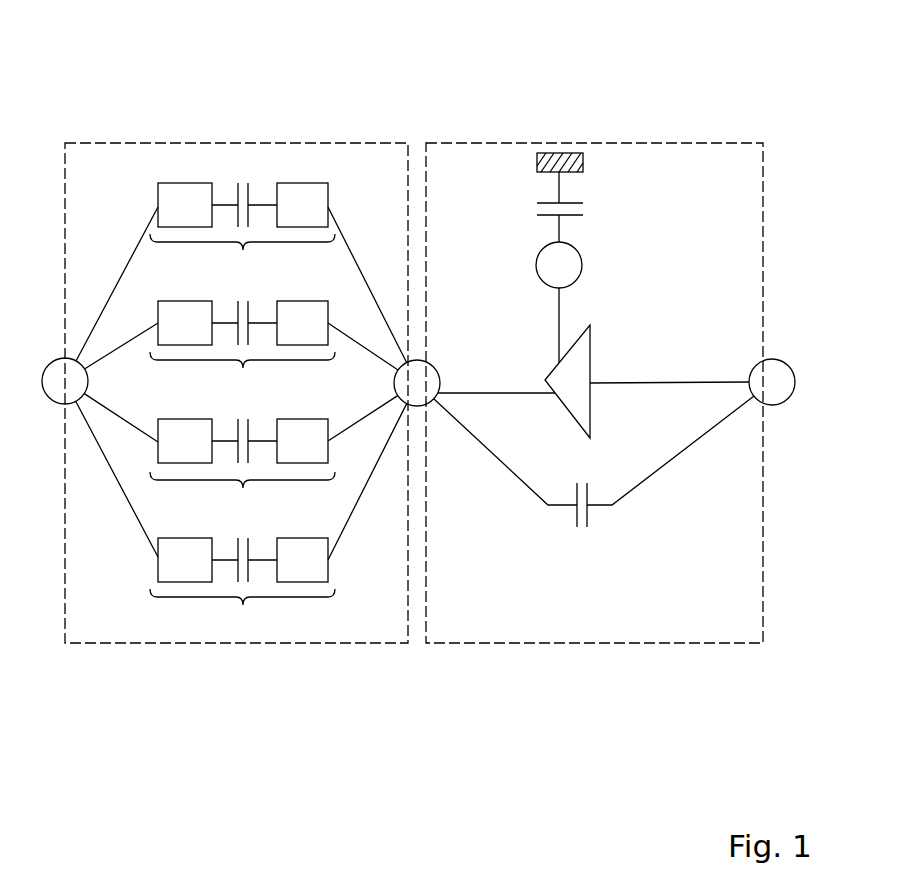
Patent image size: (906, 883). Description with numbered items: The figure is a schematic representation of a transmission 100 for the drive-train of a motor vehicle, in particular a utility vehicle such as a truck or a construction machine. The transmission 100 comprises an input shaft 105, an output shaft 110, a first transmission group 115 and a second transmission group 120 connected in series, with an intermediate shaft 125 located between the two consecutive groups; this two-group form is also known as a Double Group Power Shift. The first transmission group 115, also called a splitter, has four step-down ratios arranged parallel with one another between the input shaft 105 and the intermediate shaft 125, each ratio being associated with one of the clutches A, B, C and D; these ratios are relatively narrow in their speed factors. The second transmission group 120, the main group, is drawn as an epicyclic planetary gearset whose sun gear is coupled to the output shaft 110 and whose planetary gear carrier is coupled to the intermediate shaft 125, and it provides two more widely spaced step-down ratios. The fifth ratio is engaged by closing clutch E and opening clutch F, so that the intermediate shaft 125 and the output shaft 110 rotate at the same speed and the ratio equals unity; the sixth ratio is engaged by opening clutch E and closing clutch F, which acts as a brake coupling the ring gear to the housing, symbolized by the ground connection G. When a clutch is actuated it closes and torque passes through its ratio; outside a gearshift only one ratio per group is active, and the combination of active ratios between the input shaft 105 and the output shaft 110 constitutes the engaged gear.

The transmission 100 is at (683, 688).
The input shaft 105 is at (50, 358).
The output shaft 110 is at (782, 360).
The first transmission group 115 is at (178, 143).
The second transmission group 120 is at (662, 143).
The intermediate shaft 125 is at (437, 363).
The clutch A is at (253, 187).
The clutch B is at (255, 305).
The clutch C is at (255, 455).
The clutch D is at (232, 573).
The clutch E is at (570, 522).
The clutch F is at (568, 195).
The ground terminal G is at (559, 152).